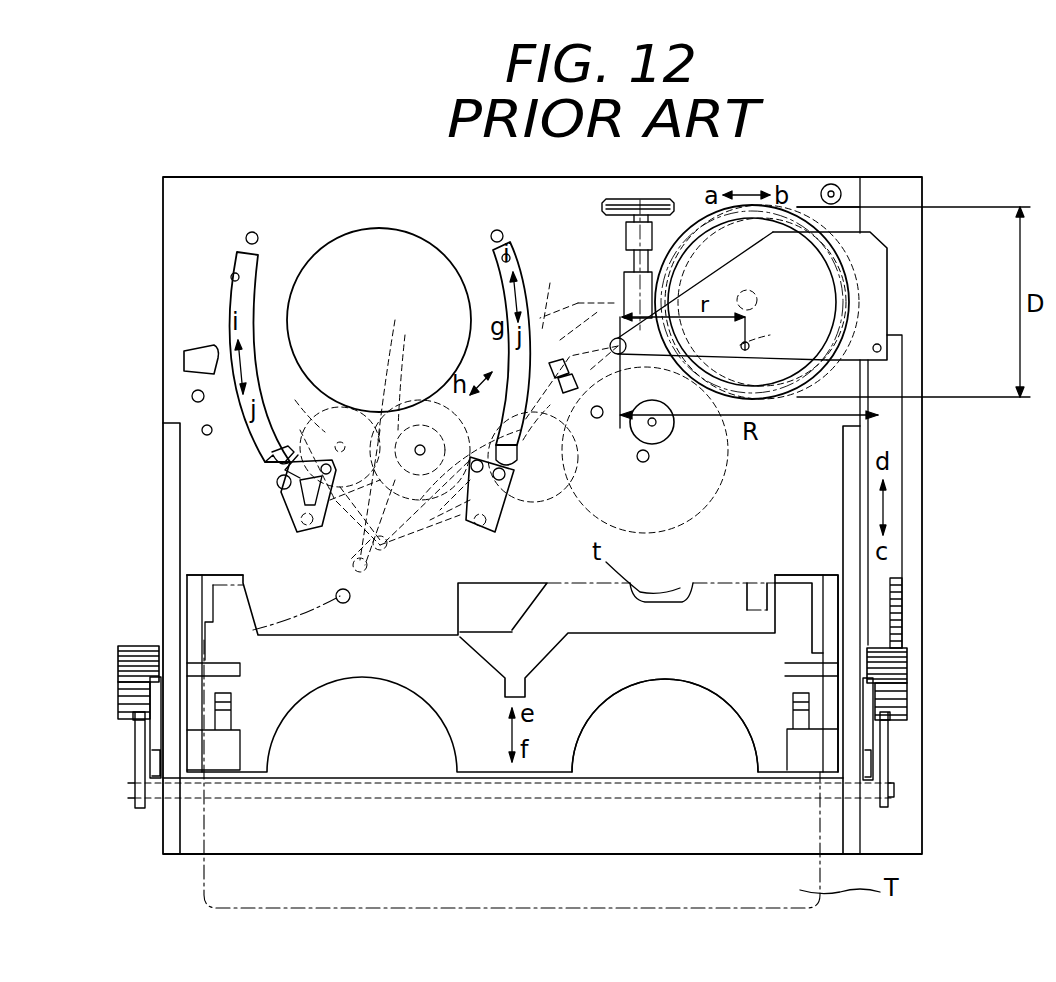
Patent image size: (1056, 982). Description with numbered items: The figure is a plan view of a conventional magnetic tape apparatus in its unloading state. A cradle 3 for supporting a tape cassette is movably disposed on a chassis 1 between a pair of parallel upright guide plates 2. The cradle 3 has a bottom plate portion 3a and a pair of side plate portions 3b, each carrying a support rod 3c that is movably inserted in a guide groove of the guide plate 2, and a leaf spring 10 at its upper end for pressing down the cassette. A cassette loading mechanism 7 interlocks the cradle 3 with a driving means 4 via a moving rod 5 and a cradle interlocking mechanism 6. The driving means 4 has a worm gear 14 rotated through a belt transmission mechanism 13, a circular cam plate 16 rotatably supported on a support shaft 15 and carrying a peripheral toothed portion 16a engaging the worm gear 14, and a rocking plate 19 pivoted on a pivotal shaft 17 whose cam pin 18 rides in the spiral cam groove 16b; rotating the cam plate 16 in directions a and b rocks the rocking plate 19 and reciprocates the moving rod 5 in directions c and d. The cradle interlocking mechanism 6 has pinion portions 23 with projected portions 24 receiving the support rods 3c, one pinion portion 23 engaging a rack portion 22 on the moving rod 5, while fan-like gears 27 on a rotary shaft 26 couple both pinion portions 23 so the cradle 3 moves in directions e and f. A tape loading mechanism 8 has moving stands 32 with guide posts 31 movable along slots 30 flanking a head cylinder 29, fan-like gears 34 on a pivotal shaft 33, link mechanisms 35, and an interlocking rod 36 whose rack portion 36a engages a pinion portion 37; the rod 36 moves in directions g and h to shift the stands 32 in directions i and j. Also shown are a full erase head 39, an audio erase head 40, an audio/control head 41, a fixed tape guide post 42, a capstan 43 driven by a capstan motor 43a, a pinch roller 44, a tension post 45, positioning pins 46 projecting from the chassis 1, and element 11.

The chassis 1 is at (178, 240).
The guide plates 2 is at (176, 448).
The cradle 3 is at (485, 782).
The bottom plate portion 3a is at (552, 780).
The side plate portions 3b is at (198, 580).
The support rod 3c is at (152, 722).
The driving means 4 is at (882, 226).
The moving rod 5 is at (902, 366).
The cradle interlocking mechanism 6 is at (932, 668).
The cassette loading mechanism 7 is at (935, 466).
The tape loading mechanism 8 is at (235, 236).
The leaf spring 10 is at (228, 714).
The pin 11 is at (834, 186).
The belt transmission mechanism 13 is at (625, 200).
The worm gear 14 is at (624, 296).
The support shaft 15 is at (758, 302).
The cam plate 16 is at (738, 248).
The toothed portion 16a is at (636, 236).
The spiral cam groove 16b is at (796, 230).
The pivotal shaft 17 is at (612, 345).
The cam pin 18 is at (755, 345).
The rocking plate 19 is at (882, 302).
The rack portion 22 is at (900, 590).
The pinion portions 23 is at (118, 656).
The projected portions 24 is at (128, 692).
The rotary shaft 26 is at (690, 800).
The fan-like gears 27 is at (136, 780).
The head cylinder 29 is at (405, 242).
The slots 30 is at (232, 280).
The guide posts 31 is at (278, 480).
The moving stands 32 is at (298, 528).
The pivotal shaft 33 is at (352, 438).
The fan-like gears 34 is at (400, 430).
The link mechanisms 35 is at (345, 548).
The interlocking rod 36 is at (571, 340).
The rack portion 36a is at (500, 465).
The pinion portion 37 is at (395, 369).
The full erase head 39 is at (186, 353).
The audio erase head 40 is at (572, 372).
The audio/control head 41 is at (565, 393).
The fixed tape guide post 42 is at (200, 428).
The capstan 43 is at (643, 463).
The capstan motor 43a is at (695, 518).
The pinch roller 44 is at (664, 432).
The tension post 45 is at (352, 598).
The pins 46 is at (258, 236).